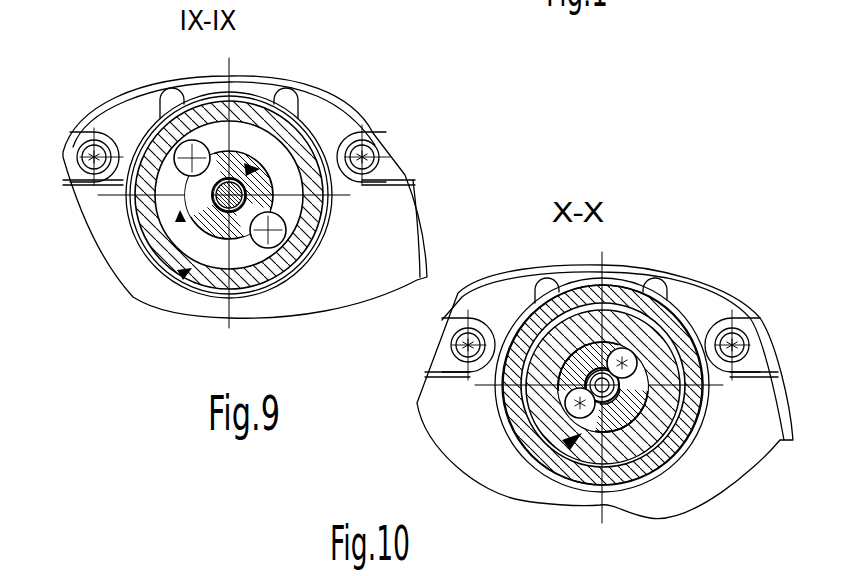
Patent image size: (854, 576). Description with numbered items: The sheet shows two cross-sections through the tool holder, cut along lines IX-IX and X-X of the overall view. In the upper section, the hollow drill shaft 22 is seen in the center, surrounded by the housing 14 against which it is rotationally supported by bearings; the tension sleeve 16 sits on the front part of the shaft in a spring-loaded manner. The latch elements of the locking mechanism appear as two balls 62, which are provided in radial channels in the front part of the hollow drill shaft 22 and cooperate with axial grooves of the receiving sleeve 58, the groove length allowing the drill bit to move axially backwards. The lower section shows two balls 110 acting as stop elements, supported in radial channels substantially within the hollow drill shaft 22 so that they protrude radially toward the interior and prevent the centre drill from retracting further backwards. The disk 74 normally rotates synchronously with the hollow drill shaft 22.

In FIG. 10, the housing 14 is at (516, 410).
In FIG. 9, the tension sleeve 16 is at (181, 279).
In FIG. 9, the hollow drill shaft 22 is at (162, 268).
In FIG. 9, the receiving sleeve 58 is at (273, 163).
In FIG. 9, the balls 62 is at (153, 125).
In FIG. 10, the disk 74 is at (540, 473).
In FIG. 10, the balls 110 is at (715, 385).